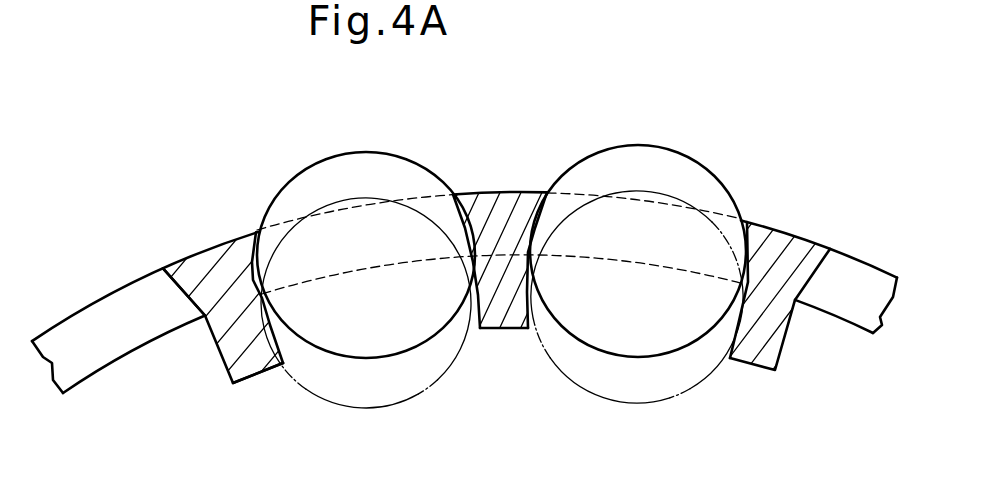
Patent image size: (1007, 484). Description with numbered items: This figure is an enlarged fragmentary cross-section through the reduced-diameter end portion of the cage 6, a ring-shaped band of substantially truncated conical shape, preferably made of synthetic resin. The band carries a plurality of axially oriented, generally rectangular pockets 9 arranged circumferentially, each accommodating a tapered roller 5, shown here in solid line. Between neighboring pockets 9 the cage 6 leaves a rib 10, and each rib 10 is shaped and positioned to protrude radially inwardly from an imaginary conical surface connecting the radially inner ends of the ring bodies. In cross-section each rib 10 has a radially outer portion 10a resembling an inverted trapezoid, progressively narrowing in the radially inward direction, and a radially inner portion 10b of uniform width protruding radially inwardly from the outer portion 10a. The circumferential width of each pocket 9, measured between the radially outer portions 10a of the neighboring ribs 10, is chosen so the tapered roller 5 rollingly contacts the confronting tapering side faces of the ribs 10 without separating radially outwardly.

The tapered roller 5 is at (425, 212).
The cage 6 is at (82, 308).
The pocket 9 is at (266, 292).
The rib 10 is at (210, 275).
The radially outer portion 10a is at (193, 292).
The radially inner portion 10b is at (237, 352).